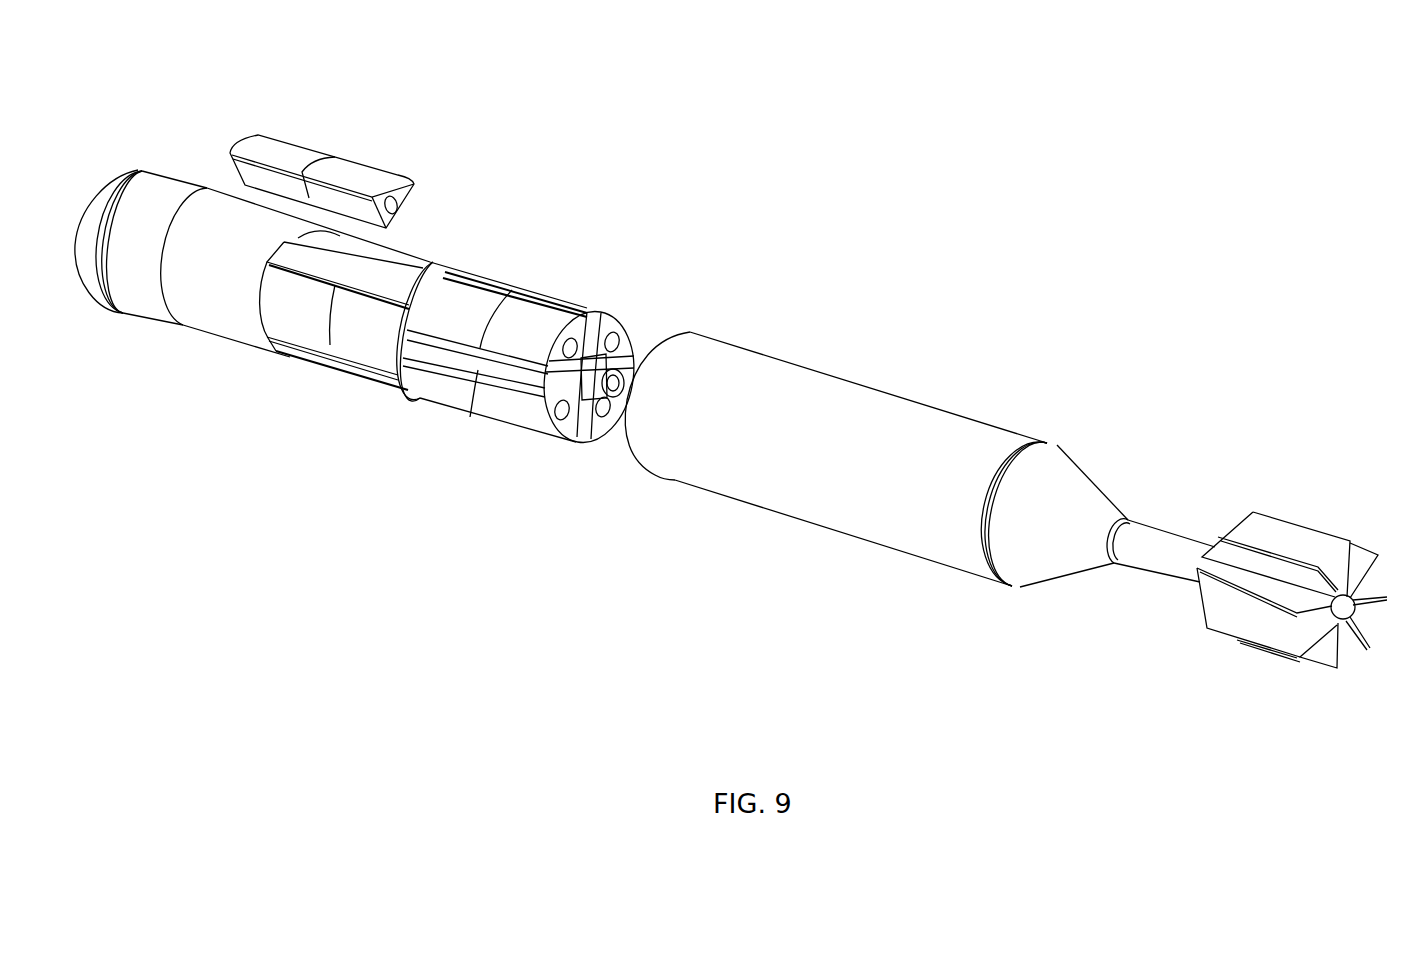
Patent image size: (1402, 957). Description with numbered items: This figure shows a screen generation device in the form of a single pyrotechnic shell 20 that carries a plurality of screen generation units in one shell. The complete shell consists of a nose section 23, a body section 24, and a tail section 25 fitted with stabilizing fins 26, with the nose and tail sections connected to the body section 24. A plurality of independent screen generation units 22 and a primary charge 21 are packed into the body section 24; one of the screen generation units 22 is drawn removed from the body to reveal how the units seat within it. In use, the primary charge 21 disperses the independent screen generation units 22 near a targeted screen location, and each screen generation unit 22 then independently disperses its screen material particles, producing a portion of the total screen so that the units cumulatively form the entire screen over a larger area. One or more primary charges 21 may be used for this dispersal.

The pyrotechnic shell 20 is at (778, 719).
The primary charge 21 is at (609, 418).
The screen generation units 22 is at (236, 130).
The nose section 23 is at (118, 168).
The body section 24 is at (878, 392).
The tail section 25 is at (1102, 490).
The stabilizing fins 26 is at (1266, 512).